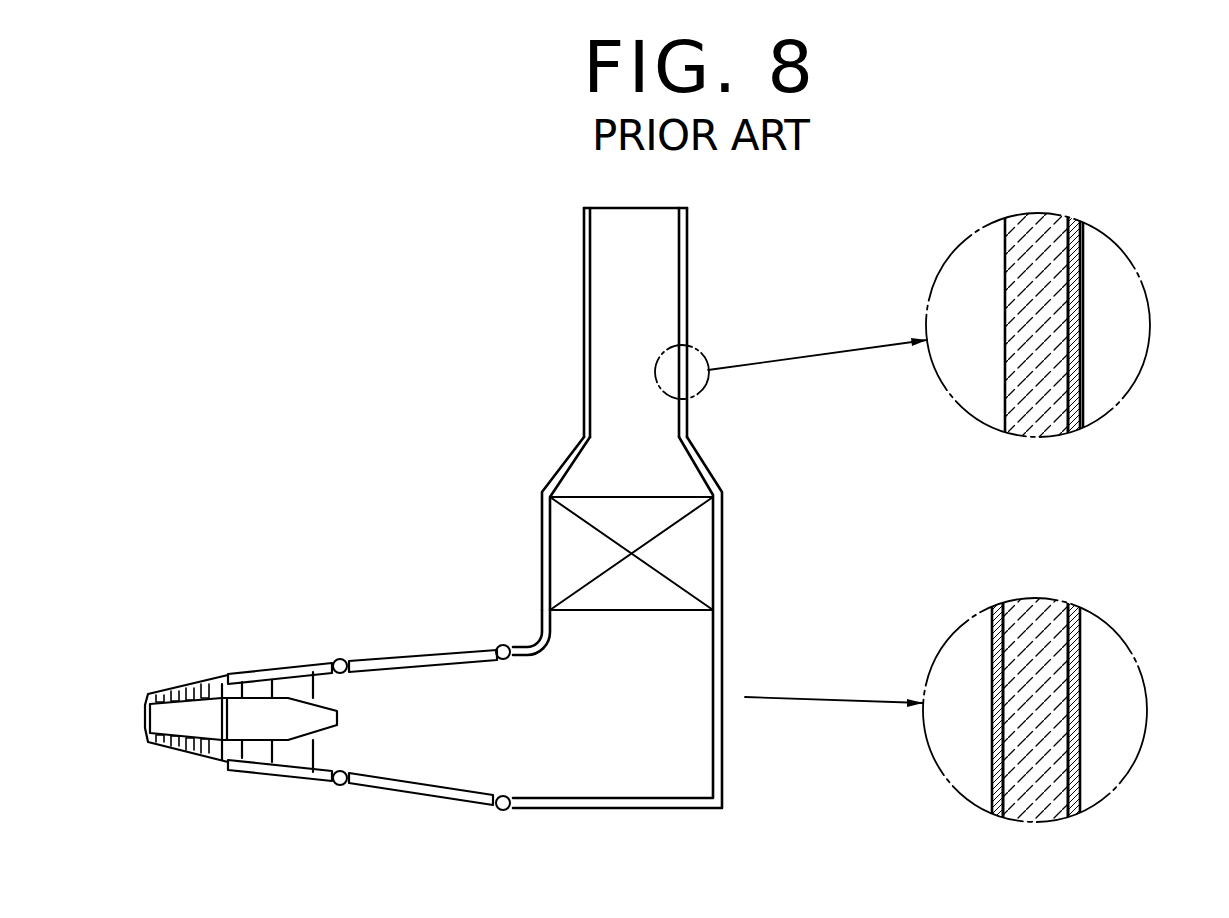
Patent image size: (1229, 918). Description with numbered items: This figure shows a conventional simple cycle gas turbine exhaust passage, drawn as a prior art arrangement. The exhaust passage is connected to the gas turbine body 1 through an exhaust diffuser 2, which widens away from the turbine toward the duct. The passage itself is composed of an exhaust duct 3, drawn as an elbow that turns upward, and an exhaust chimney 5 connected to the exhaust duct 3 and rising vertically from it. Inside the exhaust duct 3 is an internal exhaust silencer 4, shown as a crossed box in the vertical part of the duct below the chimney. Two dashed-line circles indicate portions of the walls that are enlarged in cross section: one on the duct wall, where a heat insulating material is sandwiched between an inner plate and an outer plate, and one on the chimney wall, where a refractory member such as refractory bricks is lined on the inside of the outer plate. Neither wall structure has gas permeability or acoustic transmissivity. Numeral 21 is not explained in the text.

The gas turbine body 1 is at (220, 630).
The exhaust diffuser 2 is at (348, 630).
The exhaust duct 3 is at (348, 630).
The exhaust silencer 4 is at (693, 575).
The exhaust chimney 5 is at (570, 208).
The cartridge 21 is at (250, 747).